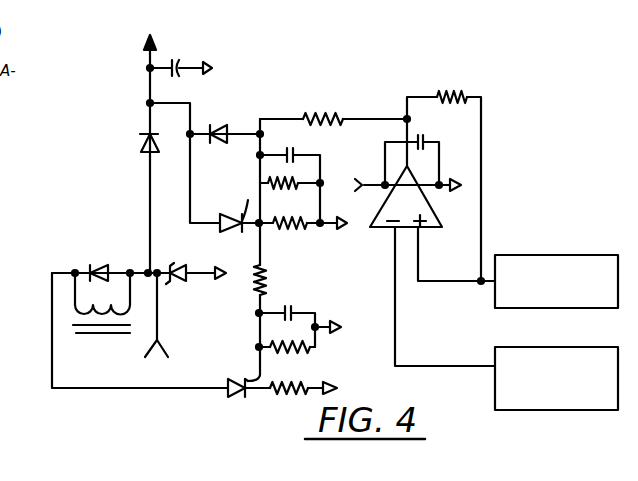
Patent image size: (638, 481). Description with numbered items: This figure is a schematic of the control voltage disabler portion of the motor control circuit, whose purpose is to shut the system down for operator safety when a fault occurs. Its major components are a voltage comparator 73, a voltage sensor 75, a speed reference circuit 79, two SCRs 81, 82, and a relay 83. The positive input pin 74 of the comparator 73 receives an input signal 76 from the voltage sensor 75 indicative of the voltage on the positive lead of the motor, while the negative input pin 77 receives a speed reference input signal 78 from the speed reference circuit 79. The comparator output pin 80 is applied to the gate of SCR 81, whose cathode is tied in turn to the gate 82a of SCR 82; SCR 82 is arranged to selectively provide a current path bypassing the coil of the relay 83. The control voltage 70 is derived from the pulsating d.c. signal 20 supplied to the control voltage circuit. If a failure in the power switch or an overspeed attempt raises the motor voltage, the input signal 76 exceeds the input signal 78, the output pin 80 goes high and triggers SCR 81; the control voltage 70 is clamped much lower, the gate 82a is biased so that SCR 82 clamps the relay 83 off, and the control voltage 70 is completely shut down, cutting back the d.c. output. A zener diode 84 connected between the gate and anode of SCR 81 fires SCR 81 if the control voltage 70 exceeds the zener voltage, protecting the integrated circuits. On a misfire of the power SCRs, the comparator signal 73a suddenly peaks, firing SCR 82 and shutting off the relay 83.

The high voltage regulator circuit 20 is at (149, 196).
The control voltage 70 is at (149, 90).
The voltage comparator 73 is at (432, 209).
The signal from voltage comparator 73a is at (351, 119).
The positive input pin 74 is at (418, 233).
The voltage sensor 75 is at (563, 234).
The input signal 76 is at (453, 283).
The negative input pin 77 is at (394, 233).
The speed reference input signal 78 is at (394, 290).
The speed reference circuit 79 is at (590, 329).
The output pin 80 is at (409, 166).
The SCR 81 is at (247, 206).
The SCR 82 is at (222, 395).
The gate 82a is at (247, 381).
The relay 83 is at (78, 319).
The zener diode 84 is at (222, 130).